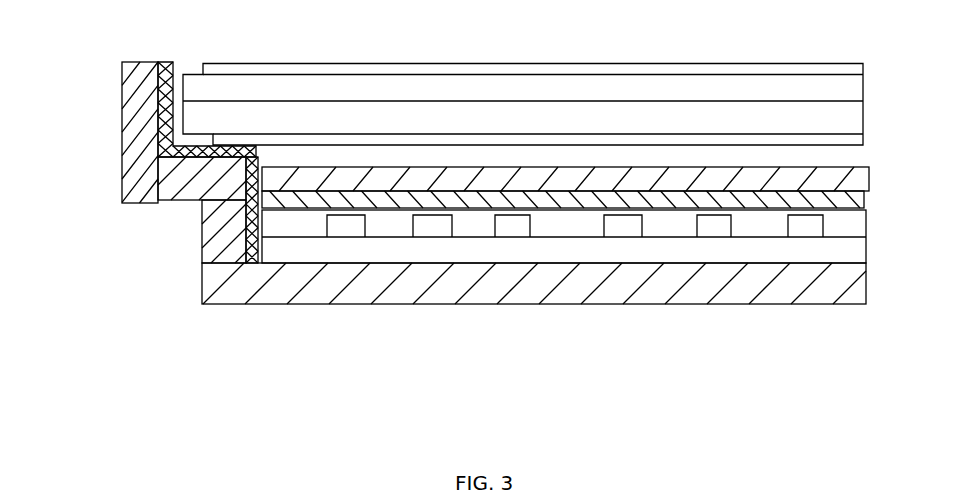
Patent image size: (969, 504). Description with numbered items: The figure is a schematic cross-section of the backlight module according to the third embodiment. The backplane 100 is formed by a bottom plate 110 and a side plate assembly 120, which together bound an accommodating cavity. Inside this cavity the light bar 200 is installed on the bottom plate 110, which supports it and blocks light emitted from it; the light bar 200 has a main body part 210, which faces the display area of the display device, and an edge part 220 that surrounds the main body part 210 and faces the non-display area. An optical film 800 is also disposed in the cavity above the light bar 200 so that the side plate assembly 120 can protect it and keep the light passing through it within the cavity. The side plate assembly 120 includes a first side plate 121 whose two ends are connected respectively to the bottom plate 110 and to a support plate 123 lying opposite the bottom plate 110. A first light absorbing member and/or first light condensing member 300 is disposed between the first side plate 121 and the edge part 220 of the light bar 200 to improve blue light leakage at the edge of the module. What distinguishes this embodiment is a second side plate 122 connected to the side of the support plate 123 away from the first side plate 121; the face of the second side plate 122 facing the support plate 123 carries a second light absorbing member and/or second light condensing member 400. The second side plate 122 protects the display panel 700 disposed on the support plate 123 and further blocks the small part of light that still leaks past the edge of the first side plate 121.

The backplane 100 is at (464, 219).
The bottom plate 110 is at (249, 282).
The side plate assembly 120 is at (154, 209).
The first side plate 121 is at (231, 242).
The second side plate 122 is at (113, 138).
The support plate 123 is at (193, 171).
The light bar 200 is at (564, 307).
The main body part 210 is at (555, 225).
The edge part 220 is at (608, 365).
The first light absorbing member and/or first light condensing member 300 is at (258, 223).
The second light absorbing member and/or second light condensing member 400 is at (164, 86).
The display panel 700 is at (513, 115).
The optical film 800 is at (862, 183).